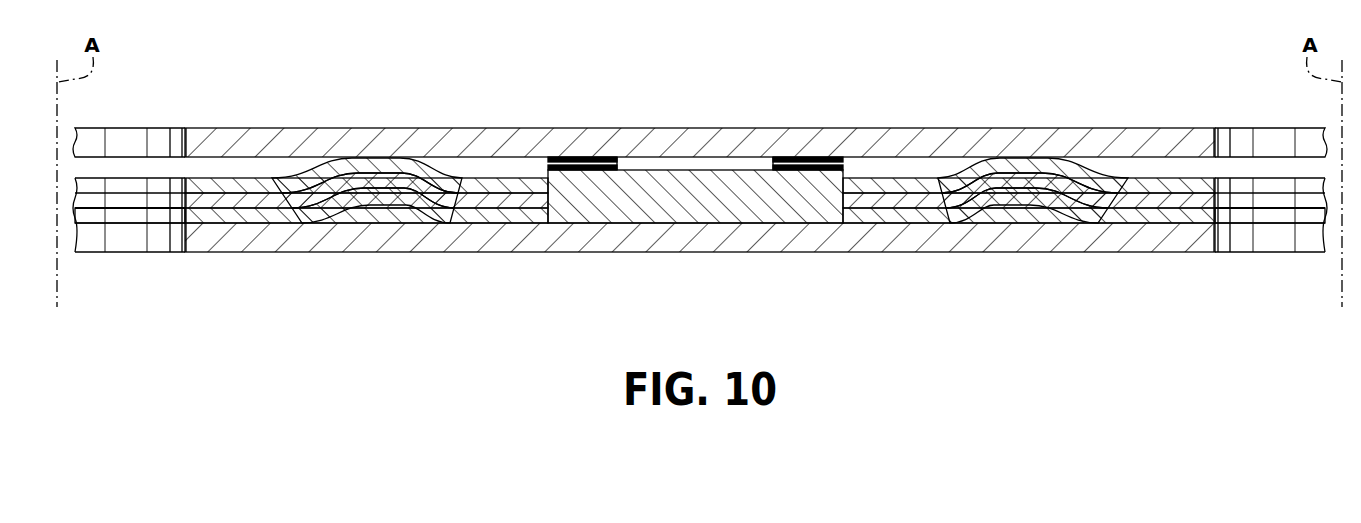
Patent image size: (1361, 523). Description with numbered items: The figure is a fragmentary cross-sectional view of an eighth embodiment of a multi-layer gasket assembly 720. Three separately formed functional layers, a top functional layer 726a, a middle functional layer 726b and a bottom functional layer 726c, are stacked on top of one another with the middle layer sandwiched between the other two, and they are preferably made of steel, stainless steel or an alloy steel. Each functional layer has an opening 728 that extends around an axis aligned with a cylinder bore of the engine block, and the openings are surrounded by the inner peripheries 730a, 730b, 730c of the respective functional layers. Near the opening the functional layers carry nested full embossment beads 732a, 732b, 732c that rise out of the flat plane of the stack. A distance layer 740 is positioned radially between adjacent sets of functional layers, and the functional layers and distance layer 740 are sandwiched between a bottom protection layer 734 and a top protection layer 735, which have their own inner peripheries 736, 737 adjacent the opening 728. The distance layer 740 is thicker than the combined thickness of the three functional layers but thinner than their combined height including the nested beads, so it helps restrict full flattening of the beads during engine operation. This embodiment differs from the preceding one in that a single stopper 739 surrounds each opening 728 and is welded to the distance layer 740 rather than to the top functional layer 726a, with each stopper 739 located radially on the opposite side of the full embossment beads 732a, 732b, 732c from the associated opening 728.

The multi-layer gasket assembly 720 is at (950, 87).
The top protection layer 735 is at (698, 147).
The bottom protection layer 734 is at (653, 240).
The opening 728 is at (123, 213).
The inner periphery of top protection layer 737 is at (182, 147).
The inner periphery of bottom protection layer 736 is at (178, 238).
The inner periphery of top functional layer 730a is at (182, 184).
The inner periphery of middle functional layer 730b is at (183, 199).
The inner periphery of bottom functional layer 730c is at (184, 214).
The top functional layer 726a is at (440, 192).
The middle functional layer 726b is at (482, 200).
The bottom functional layer 726c is at (513, 216).
The full embossment bead of top functional layer 732a is at (352, 168).
The full embossment bead of middle functional layer 732b is at (368, 198).
The full embossment bead of bottom functional layer 732c is at (402, 205).
The distance layer 740 is at (742, 213).
The stopper 739 is at (583, 157).